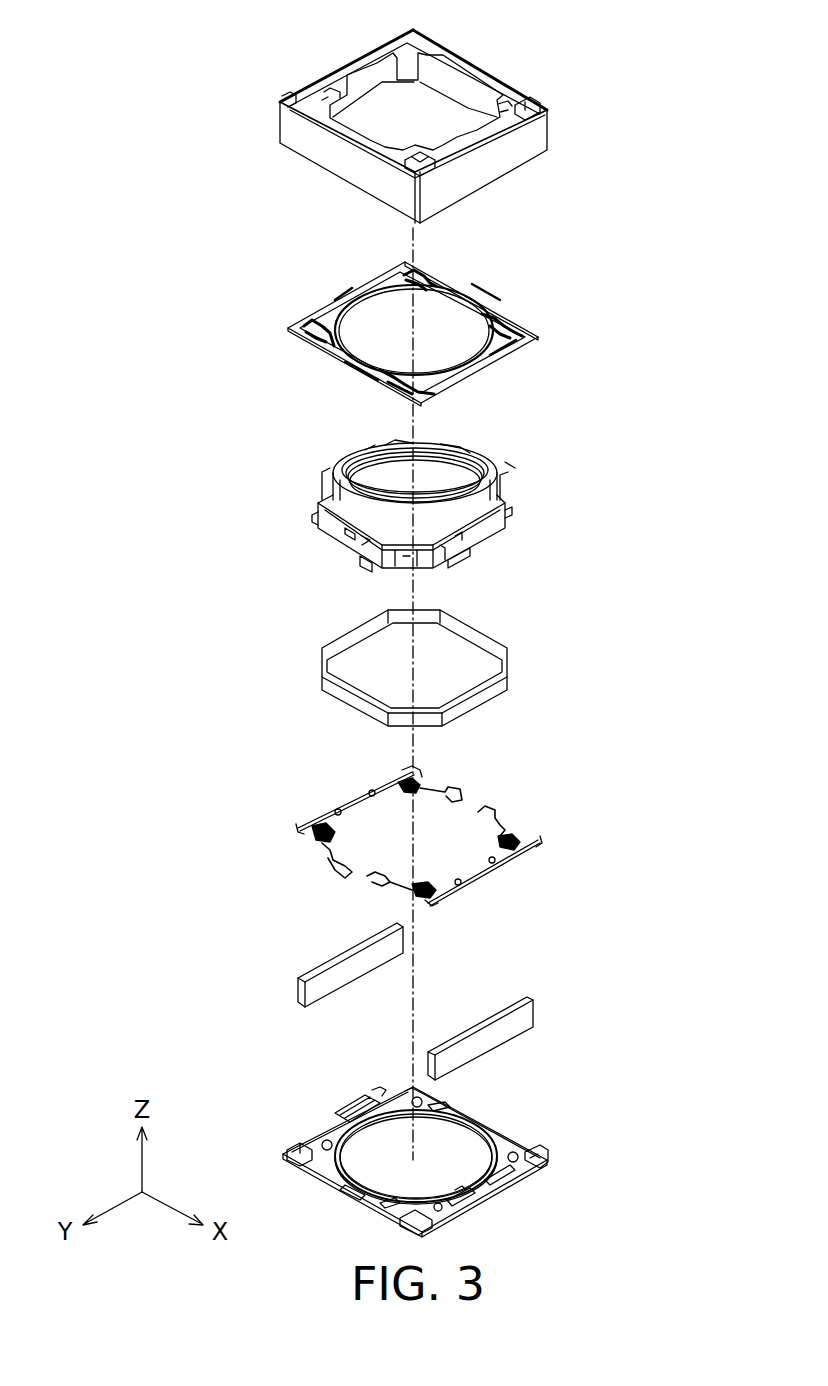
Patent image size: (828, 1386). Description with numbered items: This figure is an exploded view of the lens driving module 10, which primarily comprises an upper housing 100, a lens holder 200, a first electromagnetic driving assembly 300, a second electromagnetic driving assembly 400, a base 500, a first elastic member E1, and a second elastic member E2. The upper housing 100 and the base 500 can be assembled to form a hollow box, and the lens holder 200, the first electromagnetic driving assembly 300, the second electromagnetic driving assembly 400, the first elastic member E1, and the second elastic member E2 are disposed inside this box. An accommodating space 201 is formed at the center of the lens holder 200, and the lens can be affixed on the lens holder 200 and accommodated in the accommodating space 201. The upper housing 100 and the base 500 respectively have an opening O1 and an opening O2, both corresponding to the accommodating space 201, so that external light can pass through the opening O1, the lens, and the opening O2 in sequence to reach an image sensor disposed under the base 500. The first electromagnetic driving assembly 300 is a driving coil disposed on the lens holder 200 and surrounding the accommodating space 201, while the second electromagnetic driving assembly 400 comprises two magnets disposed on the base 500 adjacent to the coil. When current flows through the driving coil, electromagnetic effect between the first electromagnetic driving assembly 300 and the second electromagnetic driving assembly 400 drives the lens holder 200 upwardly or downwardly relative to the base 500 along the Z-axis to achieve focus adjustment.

The lens driving module 10 is at (690, 38).
The upper housing 100 is at (505, 90).
The opening O1 is at (375, 115).
The second elastic member E2 is at (503, 310).
The lens holder 200 is at (505, 482).
The accommodating space 201 is at (373, 507).
The first electromagnetic driving assembly 300 is at (503, 662).
The first elastic member E1 is at (505, 830).
The second electromagnetic driving assembly 400 is at (332, 962).
The base 500 is at (507, 1147).
The opening O2 is at (377, 1150).